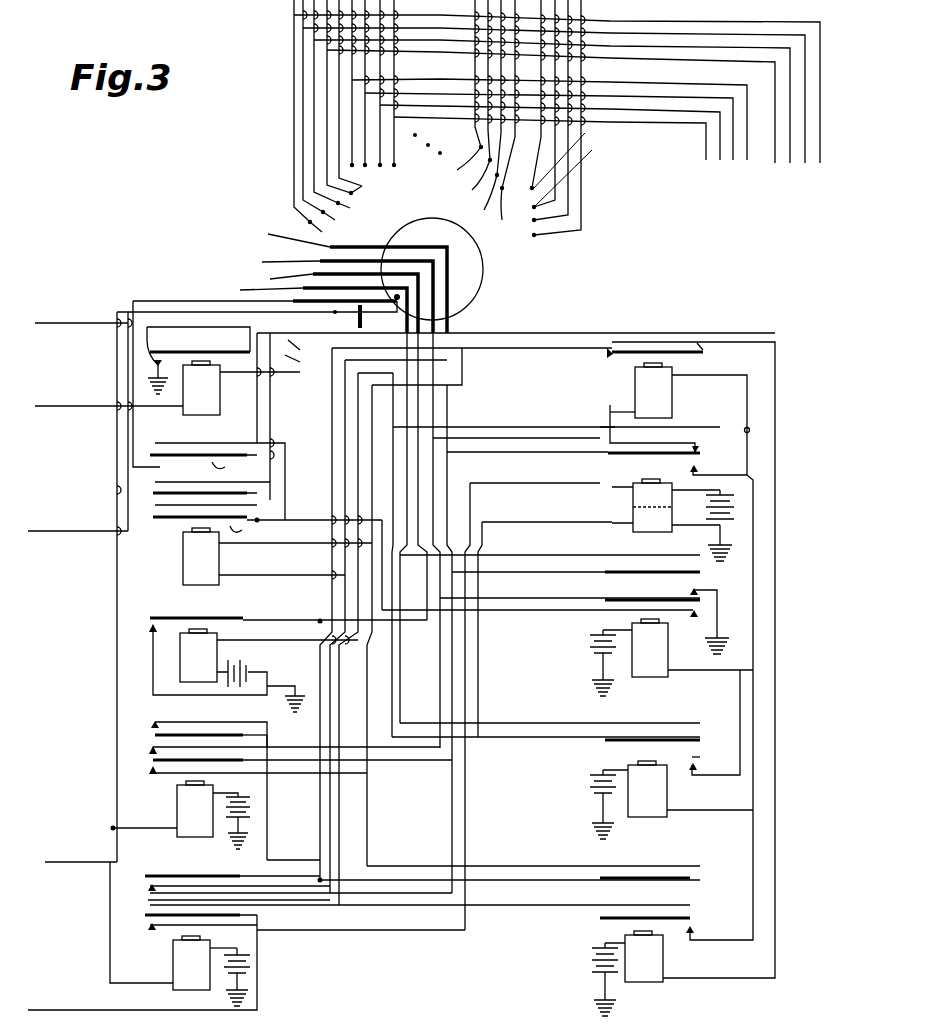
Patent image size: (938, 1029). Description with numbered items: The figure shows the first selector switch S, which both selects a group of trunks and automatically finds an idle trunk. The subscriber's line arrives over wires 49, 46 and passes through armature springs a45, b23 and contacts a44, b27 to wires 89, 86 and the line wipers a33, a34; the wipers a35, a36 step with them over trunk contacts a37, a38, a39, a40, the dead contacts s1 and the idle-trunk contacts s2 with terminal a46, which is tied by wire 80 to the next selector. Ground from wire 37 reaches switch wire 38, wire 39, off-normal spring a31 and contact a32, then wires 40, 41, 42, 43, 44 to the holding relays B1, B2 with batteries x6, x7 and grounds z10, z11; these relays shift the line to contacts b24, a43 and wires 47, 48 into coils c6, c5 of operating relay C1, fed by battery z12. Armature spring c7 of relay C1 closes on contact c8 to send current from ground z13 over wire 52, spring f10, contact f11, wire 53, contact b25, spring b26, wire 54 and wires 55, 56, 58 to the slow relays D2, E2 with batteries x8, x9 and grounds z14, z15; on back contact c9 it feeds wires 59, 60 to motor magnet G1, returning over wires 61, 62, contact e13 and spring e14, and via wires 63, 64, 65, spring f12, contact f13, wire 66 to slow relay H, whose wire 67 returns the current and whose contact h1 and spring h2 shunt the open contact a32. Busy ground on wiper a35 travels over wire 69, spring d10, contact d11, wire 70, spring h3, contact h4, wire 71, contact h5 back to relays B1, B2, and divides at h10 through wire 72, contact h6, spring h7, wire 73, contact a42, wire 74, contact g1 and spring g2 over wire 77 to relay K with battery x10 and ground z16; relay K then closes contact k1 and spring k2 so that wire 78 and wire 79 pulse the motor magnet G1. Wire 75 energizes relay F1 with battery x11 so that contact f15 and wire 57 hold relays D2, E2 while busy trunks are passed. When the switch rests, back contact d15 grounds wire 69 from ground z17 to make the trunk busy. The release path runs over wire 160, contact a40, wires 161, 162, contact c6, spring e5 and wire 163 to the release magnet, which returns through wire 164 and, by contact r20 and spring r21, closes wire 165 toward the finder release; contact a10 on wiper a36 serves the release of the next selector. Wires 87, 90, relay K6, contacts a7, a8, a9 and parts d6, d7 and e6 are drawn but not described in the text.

The wire 160 is at (294, 84).
The wire 80 is at (303, 140).
The conductor 87 is at (339, 160).
The conductor 90 is at (352, 165).
The dead contacts s1 is at (432, 140).
The contacts s2 is at (560, 198).
The first selector switch S is at (432, 257).
The contact a7 is at (362, 185).
The contact a8 is at (352, 210).
The contact a9 is at (337, 223).
The contact a10 is at (330, 238).
The off-normal spring a31 is at (273, 356).
The contact a32 is at (395, 257).
The line wiper a33 is at (345, 278).
The line wiper a34 is at (336, 292).
The wiper a35 is at (334, 301).
The wiper a36 is at (306, 307).
The contact a37 is at (500, 223).
The contact a38 is at (467, 213).
The contact a39 is at (457, 195).
The contact a40 is at (442, 175).
The contact a42 is at (360, 333).
The contact a43 is at (138, 940).
The contact a44 is at (148, 886).
The armature spring a45 is at (148, 915).
The terminal a46 is at (497, 250).
The wire 161 is at (407, 410).
The wire 162 is at (400, 683).
The wire 163 is at (512, 735).
The wire 164 is at (73, 400).
The wire 165 is at (80, 323).
The wire 37 is at (150, 380).
The switch wire 38 is at (72, 534).
The wire 39 is at (133, 425).
The wire 40 is at (203, 305).
The wire 41 is at (117, 465).
The wire 42 is at (117, 592).
The wire 43 is at (146, 828).
The wire 44 is at (110, 952).
The wire 46 is at (72, 864).
The wire 47 is at (552, 524).
The wire 48 is at (515, 486).
The wire 49 is at (60, 1010).
The wire 52 is at (575, 945).
The wire 53 is at (572, 908).
The wire 54 is at (418, 773).
The wire 55 is at (760, 545).
The wire 56 is at (684, 674).
The wire 57 is at (758, 768).
The wire 58 is at (710, 812).
The wire 59 is at (652, 442).
The wire 60 is at (610, 412).
The wire 61 is at (718, 378).
The wire 62 is at (748, 462).
The wire 63 is at (548, 440).
The wire 64 is at (322, 712).
The wire 65 is at (488, 866).
The wire 66 is at (562, 868).
The wire 67 is at (257, 425).
The wire 69 is at (420, 417).
The wire 70 is at (525, 605).
The wire 71 is at (285, 495).
The wire 72 is at (250, 490).
The wire 73 is at (270, 420).
The wire 74 is at (505, 334).
The wire 75 is at (775, 362).
The wire 77 is at (522, 350).
The wire 78 is at (235, 696).
The wire 79 is at (283, 621).
The wire 86 is at (332, 690).
The wire 89 is at (302, 905).
The contact r20 is at (196, 339).
The spring r21 is at (195, 352).
The relay K6 is at (234, 426).
The contact h1 is at (176, 473).
The spring h2 is at (223, 471).
The spring h3 is at (242, 534).
The contact h4 is at (156, 518).
The contact h5 is at (152, 457).
The contact h6 is at (153, 493).
The spring h7 is at (158, 493).
The branch point h10 is at (258, 520).
The relay H is at (277, 556).
The contact k1 is at (150, 624).
The spring k2 is at (186, 618).
The relay K is at (269, 655).
The battery x10 is at (248, 668).
The ground z16 is at (286, 703).
The armature spring b23 is at (153, 734).
The contact b24 is at (152, 748).
The contact b25 is at (152, 770).
The spring b26 is at (150, 761).
The contact b27 is at (152, 724).
The relay B1 is at (222, 797).
The battery x6 is at (250, 808).
The ground z10 is at (250, 846).
The relay B2 is at (205, 963).
The battery x7 is at (250, 965).
The ground z11 is at (250, 1000).
The contact g1 is at (700, 345).
The armature spring g2 is at (670, 352).
The motor magnet G1 is at (641, 390).
The coil c5 is at (646, 497).
The coil c6 is at (646, 522).
The armature spring c7 is at (703, 457).
The contact c8 is at (697, 468).
The back contact c9 is at (702, 452).
The operating relay C1 is at (661, 505).
The battery z12 is at (736, 505).
The contact d6 is at (610, 578).
The contact d7 is at (695, 570).
The armature spring d10 is at (645, 597).
The contact d11 is at (695, 612).
The back contact d15 is at (711, 602).
The ground z17 is at (708, 648).
The slow relay D2 is at (678, 697).
The battery x8 is at (592, 640).
The ground z14 is at (594, 685).
The spring e5 is at (643, 738).
The contact e6 is at (693, 736).
The contact e13 is at (700, 768).
The spring e14 is at (698, 755).
The slow relay E2 is at (678, 789).
The battery x9 is at (592, 780).
The ground z15 is at (594, 828).
The armature spring f10 is at (692, 918).
The contact f11 is at (692, 915).
The spring f12 is at (695, 880).
The contact f13 is at (692, 875).
The contact f15 is at (695, 930).
The relay F1 is at (634, 956).
The battery x11 is at (596, 960).
The ground z13 is at (596, 1002).